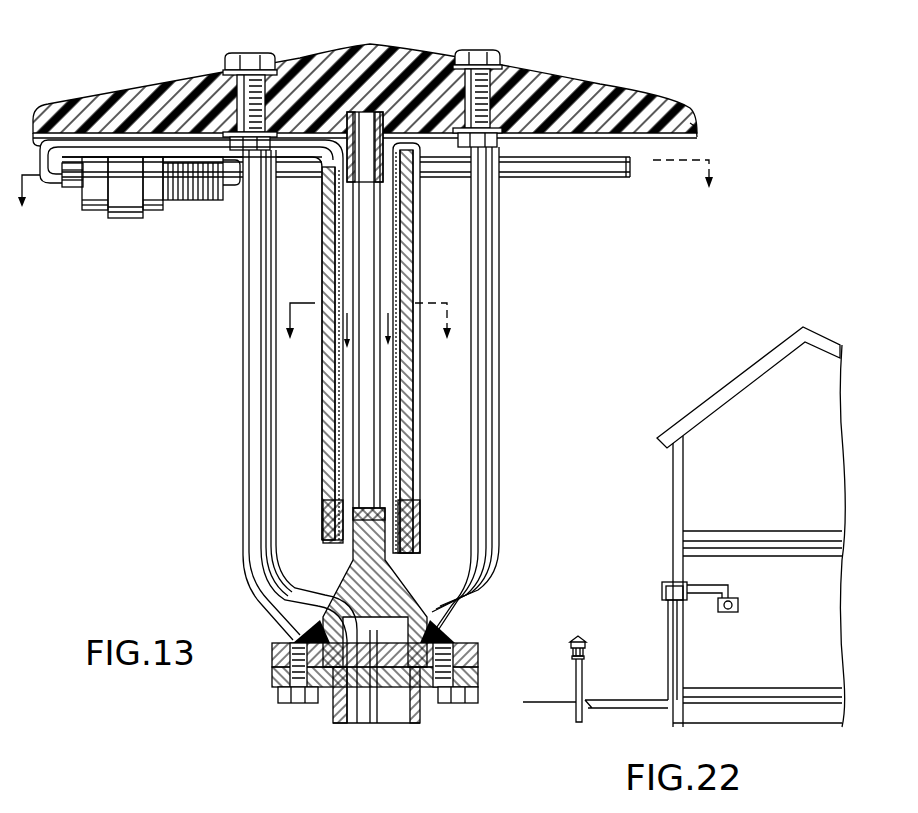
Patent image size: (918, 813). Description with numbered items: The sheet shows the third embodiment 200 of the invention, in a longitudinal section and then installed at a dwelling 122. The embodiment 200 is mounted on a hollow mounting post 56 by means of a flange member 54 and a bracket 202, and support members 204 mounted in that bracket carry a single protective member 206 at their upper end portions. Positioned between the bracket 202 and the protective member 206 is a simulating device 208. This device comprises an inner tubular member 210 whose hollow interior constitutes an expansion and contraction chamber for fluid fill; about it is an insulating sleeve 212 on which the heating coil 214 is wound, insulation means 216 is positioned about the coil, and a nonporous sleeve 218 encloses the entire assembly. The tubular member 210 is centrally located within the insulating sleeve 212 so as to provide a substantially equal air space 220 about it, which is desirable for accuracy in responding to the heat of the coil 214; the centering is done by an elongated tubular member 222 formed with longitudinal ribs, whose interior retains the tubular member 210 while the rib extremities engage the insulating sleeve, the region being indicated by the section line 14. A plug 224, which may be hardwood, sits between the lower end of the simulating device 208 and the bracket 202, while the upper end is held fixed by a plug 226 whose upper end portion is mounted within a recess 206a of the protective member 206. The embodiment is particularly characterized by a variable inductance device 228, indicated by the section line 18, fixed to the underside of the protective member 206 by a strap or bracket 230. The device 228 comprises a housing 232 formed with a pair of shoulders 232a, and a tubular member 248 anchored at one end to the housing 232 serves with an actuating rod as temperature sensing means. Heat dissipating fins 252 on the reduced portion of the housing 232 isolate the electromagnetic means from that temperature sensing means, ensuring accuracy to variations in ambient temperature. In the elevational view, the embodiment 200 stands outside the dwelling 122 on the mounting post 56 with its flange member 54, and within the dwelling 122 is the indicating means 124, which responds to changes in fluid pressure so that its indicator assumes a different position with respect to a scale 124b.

In FIG. 13, the third embodiment 200 is at (140, 321).
In FIG. 22, the third embodiment 200 is at (592, 634).
In FIG. 13, the bracket 202 is at (478, 656).
In FIG. 13, the support members 204 is at (248, 440).
In FIG. 13, the protective member 206 is at (392, 120).
In FIG. 13, the recess 206a is at (386, 127).
In FIG. 13, the simulating device 208 is at (452, 423).
In FIG. 13, the inner tubular member 210 is at (372, 387).
In FIG. 13, the insulating sleeve 212 is at (400, 250).
In FIG. 13, the heating coil 214 is at (405, 263).
In FIG. 13, the insulation means 216 is at (407, 288).
In FIG. 13, the nonporous sleeve 218 is at (323, 406).
In FIG. 13, the air space 220 is at (395, 482).
In FIG. 13, the elongated tubular member 222 is at (343, 482).
In FIG. 13, the plug 224 is at (404, 600).
In FIG. 13, the plug 226 is at (343, 130).
In FIG. 13, the variable inductance device 228 is at (116, 229).
In FIG. 13, the strap or bracket 230 is at (133, 200).
In FIG. 13, the housing 232 is at (97, 211).
In FIG. 13, the shoulders 232a is at (70, 190).
In FIG. 13, the tubular member 248 is at (578, 165).
In FIG. 13, the heat dissipating fins 252 is at (213, 198).
In FIG. 13, the section line for FIGURE 18 is at (370, 196).
In FIG. 13, the section line for FIGURE 14 is at (374, 335).
In FIG. 13, the flange member 54 is at (272, 681).
In FIG. 22, the flange member 54 is at (570, 657).
In FIG. 13, the hollow mounting post 56 is at (420, 706).
In FIG. 22, the hollow mounting post 56 is at (583, 678).
In FIG. 22, the dwelling 122 is at (675, 505).
In FIG. 22, the indicating means 124 is at (739, 606).
In FIG. 22, the scale 124b is at (732, 600).